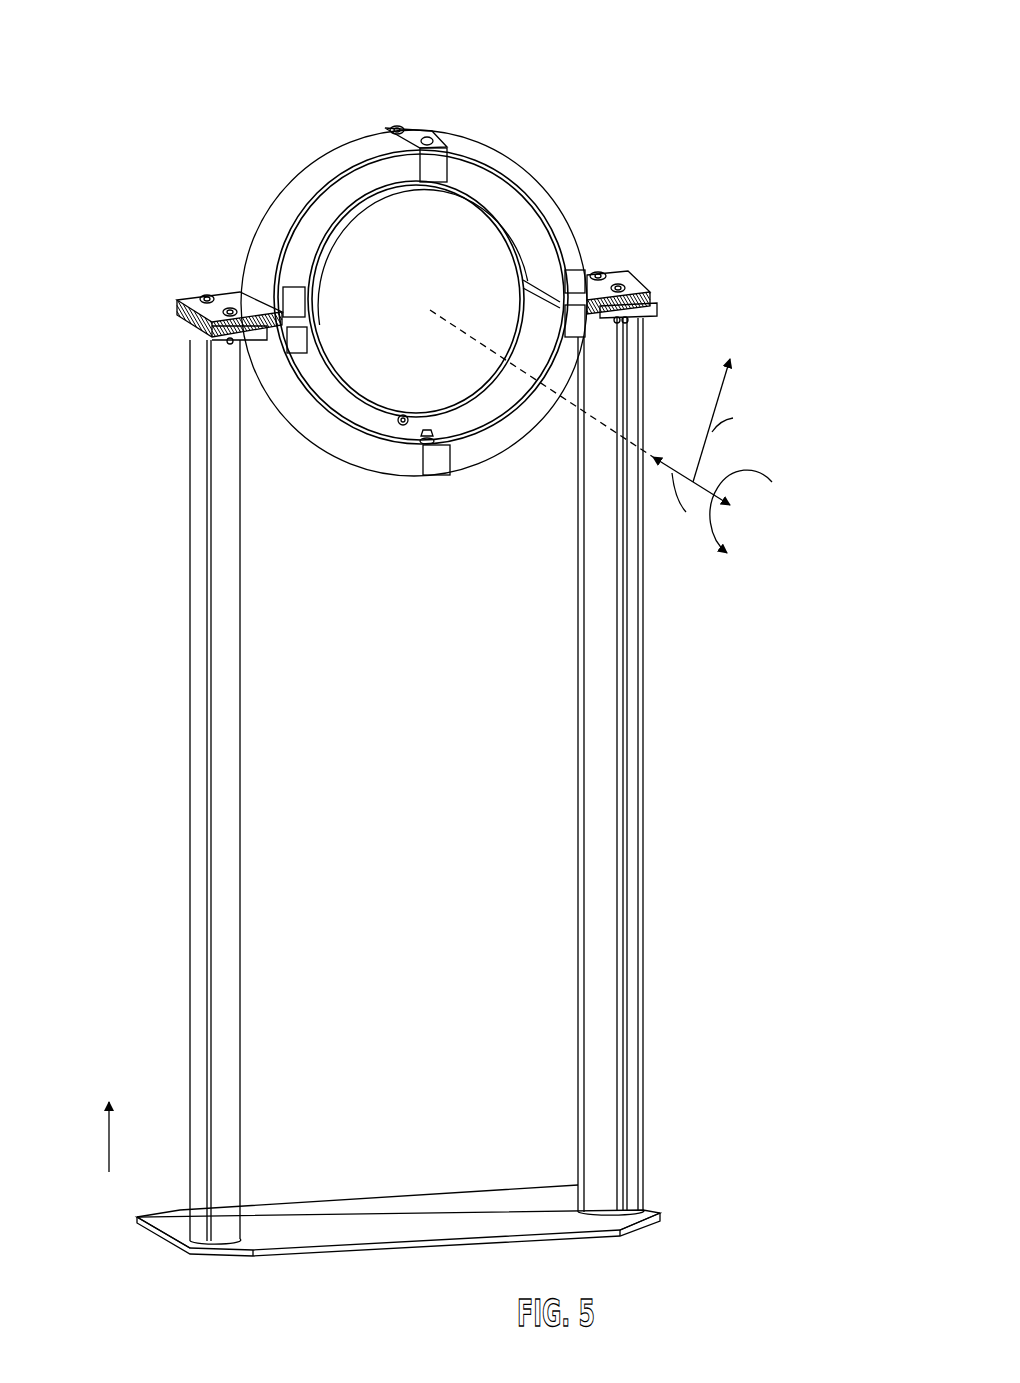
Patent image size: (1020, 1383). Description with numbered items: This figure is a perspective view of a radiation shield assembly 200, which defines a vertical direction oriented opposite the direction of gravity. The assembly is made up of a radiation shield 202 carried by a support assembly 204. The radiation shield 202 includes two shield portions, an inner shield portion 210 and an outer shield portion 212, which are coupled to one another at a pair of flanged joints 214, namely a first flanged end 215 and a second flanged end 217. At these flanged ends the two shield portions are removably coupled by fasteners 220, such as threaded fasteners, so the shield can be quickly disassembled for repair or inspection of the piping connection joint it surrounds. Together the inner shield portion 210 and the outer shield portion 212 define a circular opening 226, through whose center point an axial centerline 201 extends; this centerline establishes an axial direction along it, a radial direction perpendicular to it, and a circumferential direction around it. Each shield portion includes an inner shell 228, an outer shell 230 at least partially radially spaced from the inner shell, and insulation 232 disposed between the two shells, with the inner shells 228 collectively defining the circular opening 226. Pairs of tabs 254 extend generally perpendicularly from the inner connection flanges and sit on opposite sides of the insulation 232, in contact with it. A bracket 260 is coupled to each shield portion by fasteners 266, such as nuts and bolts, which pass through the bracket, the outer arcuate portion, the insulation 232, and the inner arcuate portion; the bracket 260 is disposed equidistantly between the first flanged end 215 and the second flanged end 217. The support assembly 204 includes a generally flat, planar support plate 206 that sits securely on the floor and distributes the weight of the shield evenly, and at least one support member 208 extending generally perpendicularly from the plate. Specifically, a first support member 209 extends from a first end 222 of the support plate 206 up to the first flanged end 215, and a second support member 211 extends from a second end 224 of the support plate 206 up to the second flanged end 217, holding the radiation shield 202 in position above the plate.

The radiation shield assembly 200 is at (586, 70).
The axial centerline 201 is at (478, 342).
The radiation shield 202 is at (232, 170).
The support assembly 204 is at (674, 726).
The support plate 206 is at (438, 1242).
The support member 208 is at (225, 831).
The first support member 209 is at (215, 792).
The inner shield portion 210 is at (400, 494).
The second support member 211 is at (611, 766).
The outer shield portion 212 is at (497, 131).
The flanged joints 214 is at (180, 304).
The first flanged end 215 is at (229, 318).
The second flanged end 217 is at (622, 297).
The fasteners 220 is at (207, 296).
The first end 222 is at (160, 1232).
The second end 224 is at (648, 1224).
The circular opening 226 is at (372, 312).
The inner shell 228 is at (363, 208).
The outer shell 230 is at (357, 173).
The insulation 232 is at (500, 182).
The tabs 254 is at (598, 271).
The bracket 260 is at (437, 162).
The fasteners 266 is at (401, 125).